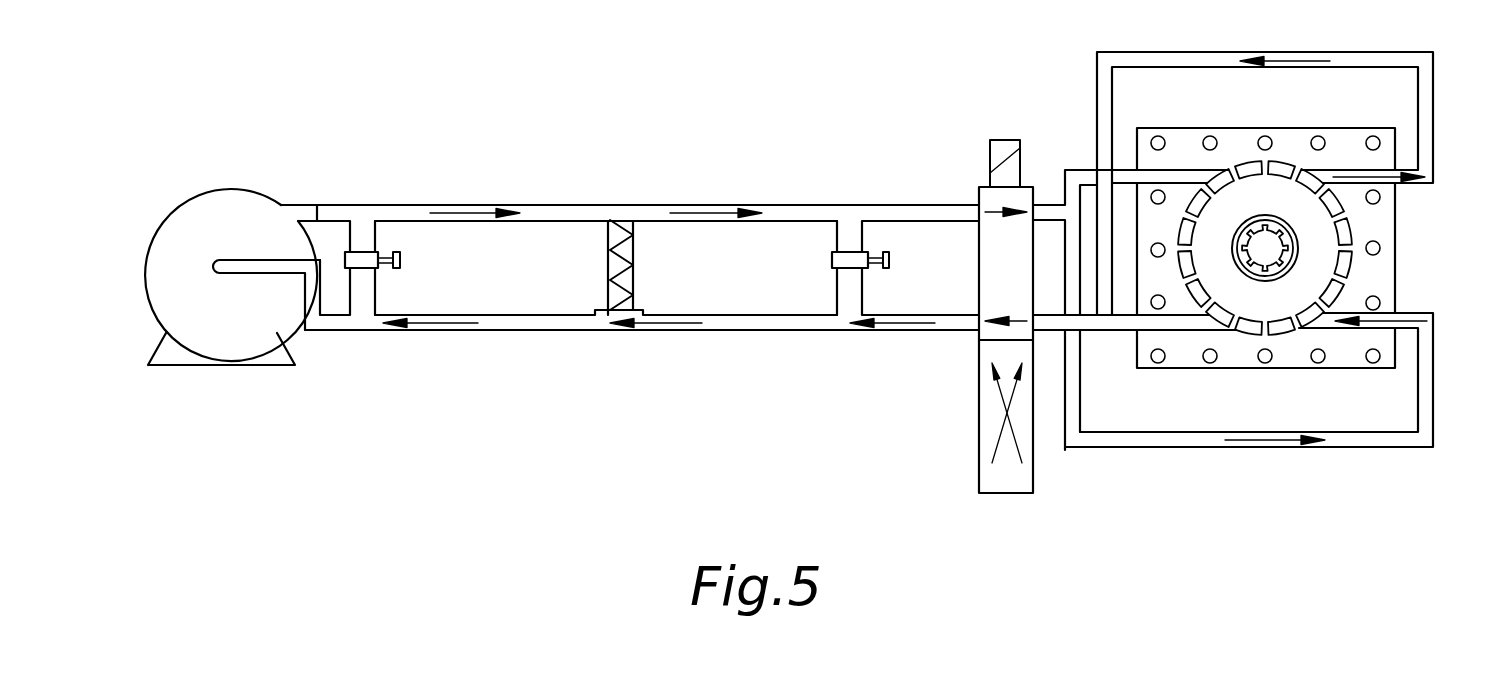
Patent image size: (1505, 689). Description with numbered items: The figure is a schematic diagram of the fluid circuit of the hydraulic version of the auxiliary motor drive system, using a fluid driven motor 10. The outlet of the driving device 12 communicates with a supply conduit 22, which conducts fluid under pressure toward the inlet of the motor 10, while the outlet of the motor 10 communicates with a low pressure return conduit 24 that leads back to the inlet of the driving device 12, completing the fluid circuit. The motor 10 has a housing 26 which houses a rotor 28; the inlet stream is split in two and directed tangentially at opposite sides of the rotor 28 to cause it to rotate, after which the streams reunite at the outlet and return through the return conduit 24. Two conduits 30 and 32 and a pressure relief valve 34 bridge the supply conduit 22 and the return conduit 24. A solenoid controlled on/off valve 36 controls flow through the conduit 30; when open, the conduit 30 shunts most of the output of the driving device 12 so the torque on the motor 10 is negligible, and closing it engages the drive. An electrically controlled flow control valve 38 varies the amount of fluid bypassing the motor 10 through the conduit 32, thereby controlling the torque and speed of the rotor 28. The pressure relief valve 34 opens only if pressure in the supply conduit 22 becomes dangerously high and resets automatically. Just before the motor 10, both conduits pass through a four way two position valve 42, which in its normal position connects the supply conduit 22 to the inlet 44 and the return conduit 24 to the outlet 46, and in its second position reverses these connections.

The motor 10 is at (1407, 247).
The driving device 12 is at (245, 195).
The supply conduit 22 is at (583, 215).
The return conduit 24 is at (545, 325).
The housing 26 is at (1387, 280).
The rotor 28 is at (1280, 312).
The conduit 30 is at (377, 235).
The conduit 32 is at (864, 240).
The pressure relief valve 34 is at (637, 250).
The solenoid controlled on/off valve 36 is at (363, 268).
The electrically controlled flow control valve 38 is at (847, 264).
The four way two position valve 42 is at (1032, 472).
The inlet 44 is at (1065, 197).
The outlet 46 is at (1102, 322).